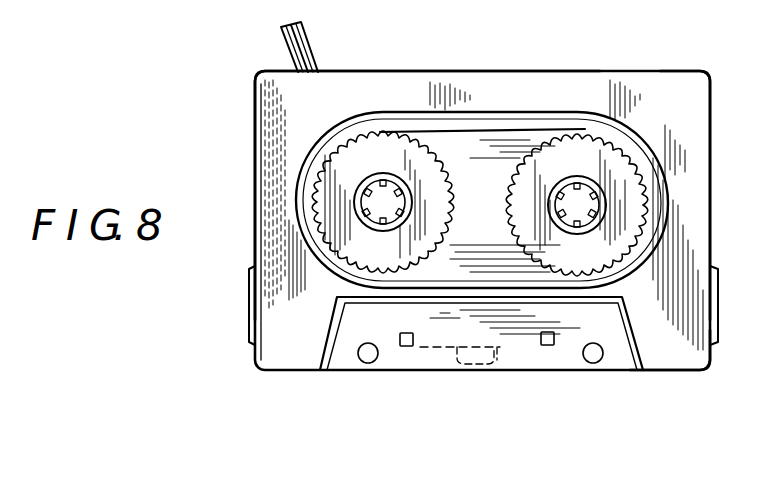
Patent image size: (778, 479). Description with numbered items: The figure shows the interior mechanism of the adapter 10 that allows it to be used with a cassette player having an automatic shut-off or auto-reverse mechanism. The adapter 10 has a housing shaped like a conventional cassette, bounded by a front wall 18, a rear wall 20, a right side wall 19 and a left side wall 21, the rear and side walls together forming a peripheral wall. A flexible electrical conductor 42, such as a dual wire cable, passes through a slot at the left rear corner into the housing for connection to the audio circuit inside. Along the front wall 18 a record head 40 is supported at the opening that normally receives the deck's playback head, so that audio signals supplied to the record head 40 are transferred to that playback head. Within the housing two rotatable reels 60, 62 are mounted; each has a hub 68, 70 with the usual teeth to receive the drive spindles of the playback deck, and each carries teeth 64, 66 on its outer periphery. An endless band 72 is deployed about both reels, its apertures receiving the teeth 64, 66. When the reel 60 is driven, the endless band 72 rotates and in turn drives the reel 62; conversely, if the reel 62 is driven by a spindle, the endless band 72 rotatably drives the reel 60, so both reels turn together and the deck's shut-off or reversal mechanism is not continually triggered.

The adapter 10 is at (240, 265).
The front wall 18 is at (690, 372).
The right side wall 19 is at (711, 144).
The rear wall 20 is at (434, 70).
The left side wall 21 is at (257, 183).
The record head 40 is at (500, 358).
The electrical conductor 42 is at (312, 45).
The rotatable reel 60 is at (376, 158).
The rotatable reel 62 is at (603, 158).
The teeth 64 is at (450, 184).
The teeth 66 is at (516, 178).
The hub 68 is at (361, 188).
The hub 70 is at (556, 224).
The endless band 72 is at (503, 130).